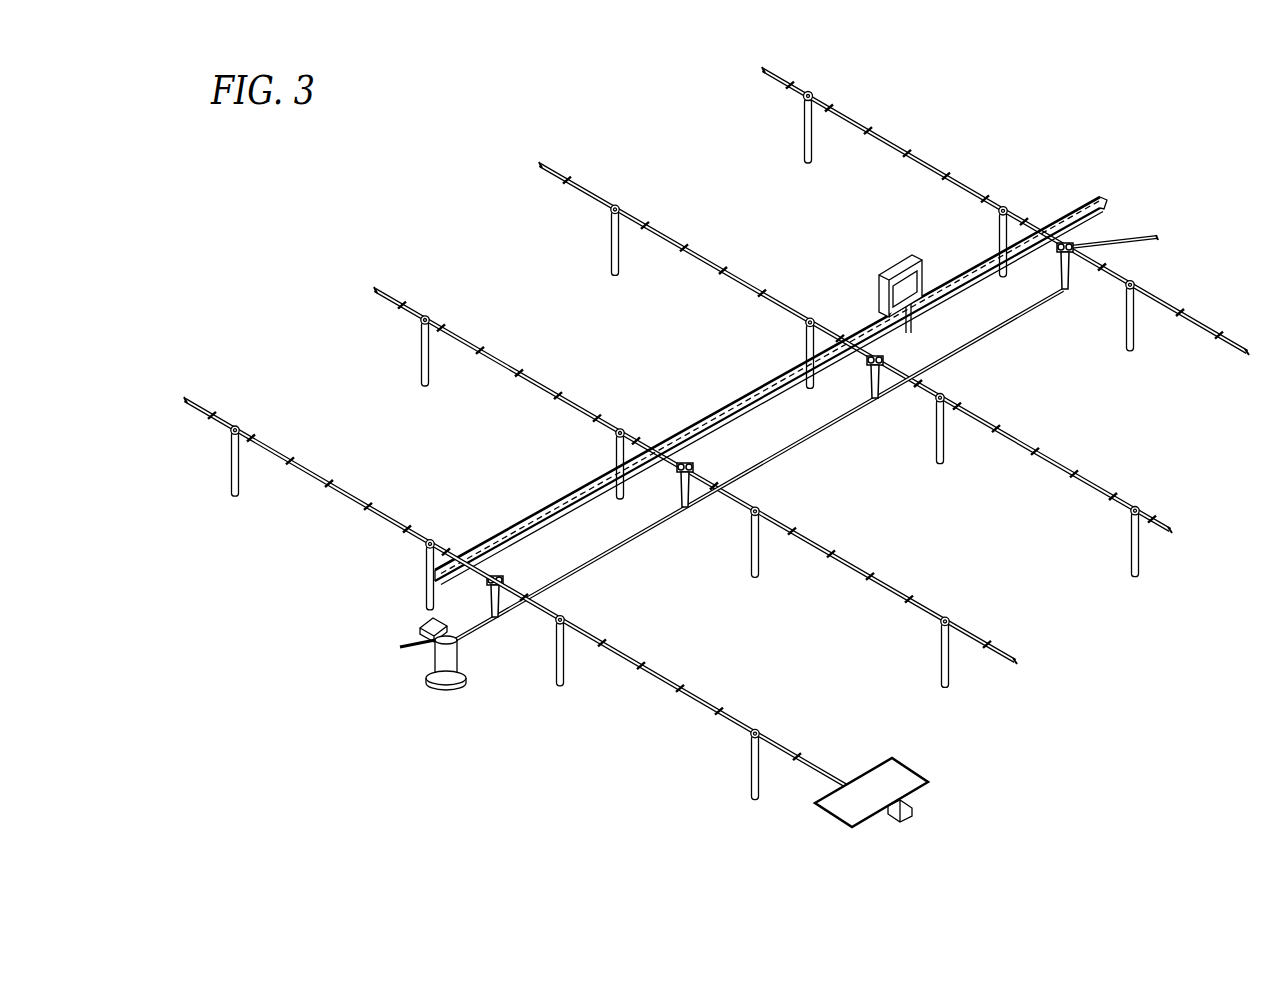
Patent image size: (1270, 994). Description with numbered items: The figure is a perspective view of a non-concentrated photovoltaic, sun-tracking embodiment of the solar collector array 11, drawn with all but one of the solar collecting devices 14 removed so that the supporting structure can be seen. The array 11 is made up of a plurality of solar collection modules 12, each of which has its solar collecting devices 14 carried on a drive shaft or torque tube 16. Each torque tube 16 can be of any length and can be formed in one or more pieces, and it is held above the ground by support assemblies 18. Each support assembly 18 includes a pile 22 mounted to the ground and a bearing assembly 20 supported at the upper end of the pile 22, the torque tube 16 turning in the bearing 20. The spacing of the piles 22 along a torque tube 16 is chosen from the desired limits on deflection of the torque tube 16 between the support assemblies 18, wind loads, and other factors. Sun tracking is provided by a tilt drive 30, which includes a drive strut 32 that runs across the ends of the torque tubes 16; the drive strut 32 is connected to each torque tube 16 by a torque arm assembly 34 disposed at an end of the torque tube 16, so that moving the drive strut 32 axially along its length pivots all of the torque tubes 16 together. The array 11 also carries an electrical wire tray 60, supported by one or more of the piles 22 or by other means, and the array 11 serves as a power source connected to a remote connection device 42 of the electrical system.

The solar collector array 11 is at (474, 150).
The solar collection module 12 is at (766, 833).
The solar collecting device 14 is at (902, 771).
The torque tube 16 is at (926, 162).
The support assembly 18 is at (762, 130).
The bearing assembly 20 is at (818, 90).
The pile 22 is at (812, 140).
The tilt drive 30 is at (470, 702).
The drive strut 32 is at (627, 560).
The torque arm assembly 34 is at (1052, 276).
The remote connection device 42 is at (870, 250).
The electrical wire tray 60 is at (768, 382).